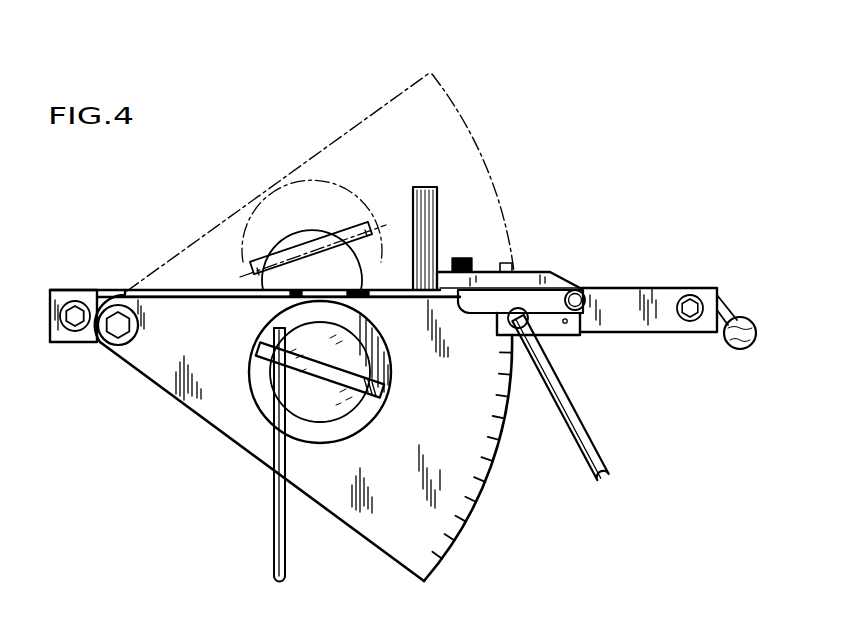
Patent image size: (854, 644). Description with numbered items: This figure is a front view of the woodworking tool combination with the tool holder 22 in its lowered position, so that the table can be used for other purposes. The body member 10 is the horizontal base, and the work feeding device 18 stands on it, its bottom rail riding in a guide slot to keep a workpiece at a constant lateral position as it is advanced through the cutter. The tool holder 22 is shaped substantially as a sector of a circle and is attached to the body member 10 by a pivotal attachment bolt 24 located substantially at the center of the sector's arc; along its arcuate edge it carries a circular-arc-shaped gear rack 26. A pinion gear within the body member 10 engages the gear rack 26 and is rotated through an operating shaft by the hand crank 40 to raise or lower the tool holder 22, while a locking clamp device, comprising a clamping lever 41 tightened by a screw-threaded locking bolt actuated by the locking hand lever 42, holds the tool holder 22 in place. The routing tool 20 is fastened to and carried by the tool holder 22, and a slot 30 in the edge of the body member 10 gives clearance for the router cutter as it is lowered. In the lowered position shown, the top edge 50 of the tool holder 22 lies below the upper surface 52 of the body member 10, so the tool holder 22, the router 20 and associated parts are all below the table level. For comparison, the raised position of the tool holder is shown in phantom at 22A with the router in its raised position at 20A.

The body member 10 is at (90, 289).
The work feeding device 18 is at (437, 190).
The routing tool 20 is at (388, 354).
The router in raised position 20A is at (333, 177).
The tool holder 22 is at (212, 428).
The tool holder in raised position 22A is at (464, 122).
The pivotal attachment bolt 24 is at (103, 345).
The gear rack 26 is at (482, 487).
The slot 30 is at (339, 292).
The hand crank 40 is at (576, 290).
The clamping lever 41 is at (567, 324).
The locking hand lever 42 is at (599, 447).
The top edge 50 is at (222, 290).
The upper surface 52 is at (164, 288).